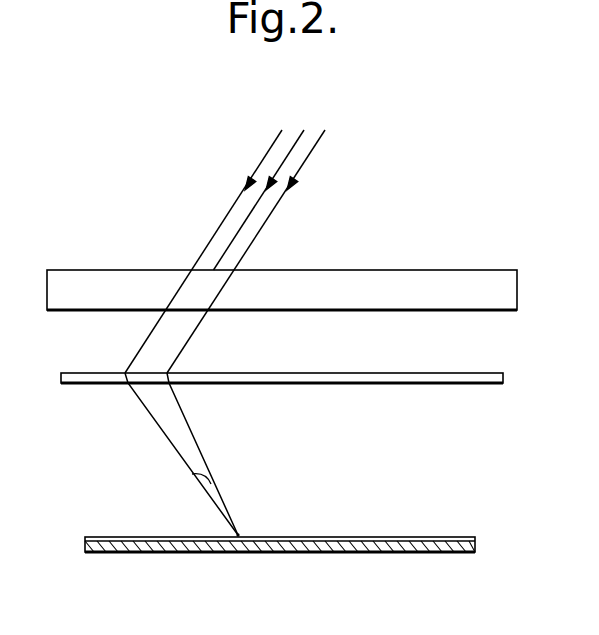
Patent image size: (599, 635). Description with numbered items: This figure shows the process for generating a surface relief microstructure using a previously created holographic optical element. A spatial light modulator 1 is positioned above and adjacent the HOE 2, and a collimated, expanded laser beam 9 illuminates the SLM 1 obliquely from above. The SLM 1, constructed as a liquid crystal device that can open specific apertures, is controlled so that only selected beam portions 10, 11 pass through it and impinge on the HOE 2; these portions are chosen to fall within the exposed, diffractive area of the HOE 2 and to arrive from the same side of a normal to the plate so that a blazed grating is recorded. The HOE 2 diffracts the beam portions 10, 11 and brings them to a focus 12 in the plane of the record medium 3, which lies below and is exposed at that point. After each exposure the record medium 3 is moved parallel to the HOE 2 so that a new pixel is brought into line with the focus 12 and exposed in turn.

The spatial light modulator 1 is at (422, 270).
The HOE 2 is at (418, 373).
The record medium 3 is at (415, 552).
The collimated, expanded laser beam 9 is at (280, 128).
The beam portion 10 is at (147, 343).
The beam portion 11 is at (193, 335).
The focus 12 is at (243, 532).